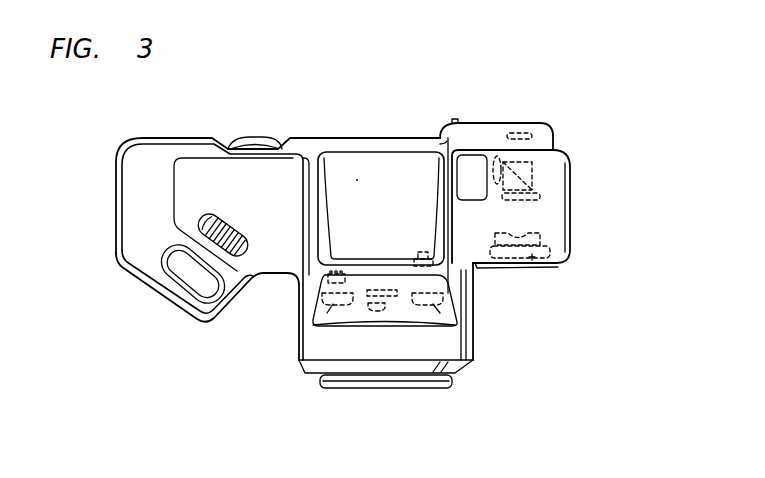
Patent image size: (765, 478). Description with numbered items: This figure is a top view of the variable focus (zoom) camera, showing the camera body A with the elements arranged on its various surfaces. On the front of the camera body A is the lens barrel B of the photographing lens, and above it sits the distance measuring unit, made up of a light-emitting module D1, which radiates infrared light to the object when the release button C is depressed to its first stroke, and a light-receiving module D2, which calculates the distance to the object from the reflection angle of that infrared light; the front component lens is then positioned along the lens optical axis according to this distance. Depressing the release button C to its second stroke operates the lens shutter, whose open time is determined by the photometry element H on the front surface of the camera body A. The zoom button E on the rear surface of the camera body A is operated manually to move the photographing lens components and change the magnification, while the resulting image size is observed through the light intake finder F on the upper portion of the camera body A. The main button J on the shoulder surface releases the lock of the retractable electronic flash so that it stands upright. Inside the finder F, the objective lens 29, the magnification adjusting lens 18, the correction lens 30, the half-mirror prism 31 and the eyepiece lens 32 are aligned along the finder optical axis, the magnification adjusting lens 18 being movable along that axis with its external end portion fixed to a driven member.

The camera body A is at (155, 152).
The zoom button E is at (273, 147).
The main button J is at (200, 222).
The release button C is at (193, 281).
The light-emitting module D1 is at (448, 310).
The light-receiving module D2 is at (310, 322).
The lens barrel B is at (366, 391).
The photometry element H is at (393, 296).
The light intake finder F is at (556, 257).
The eyepiece lens 32 is at (533, 135).
The half-mirror prism 31 is at (533, 172).
The correction lens 30 is at (540, 197).
The magnification adjusting lens 18 is at (540, 238).
The objective lens 29 is at (537, 270).